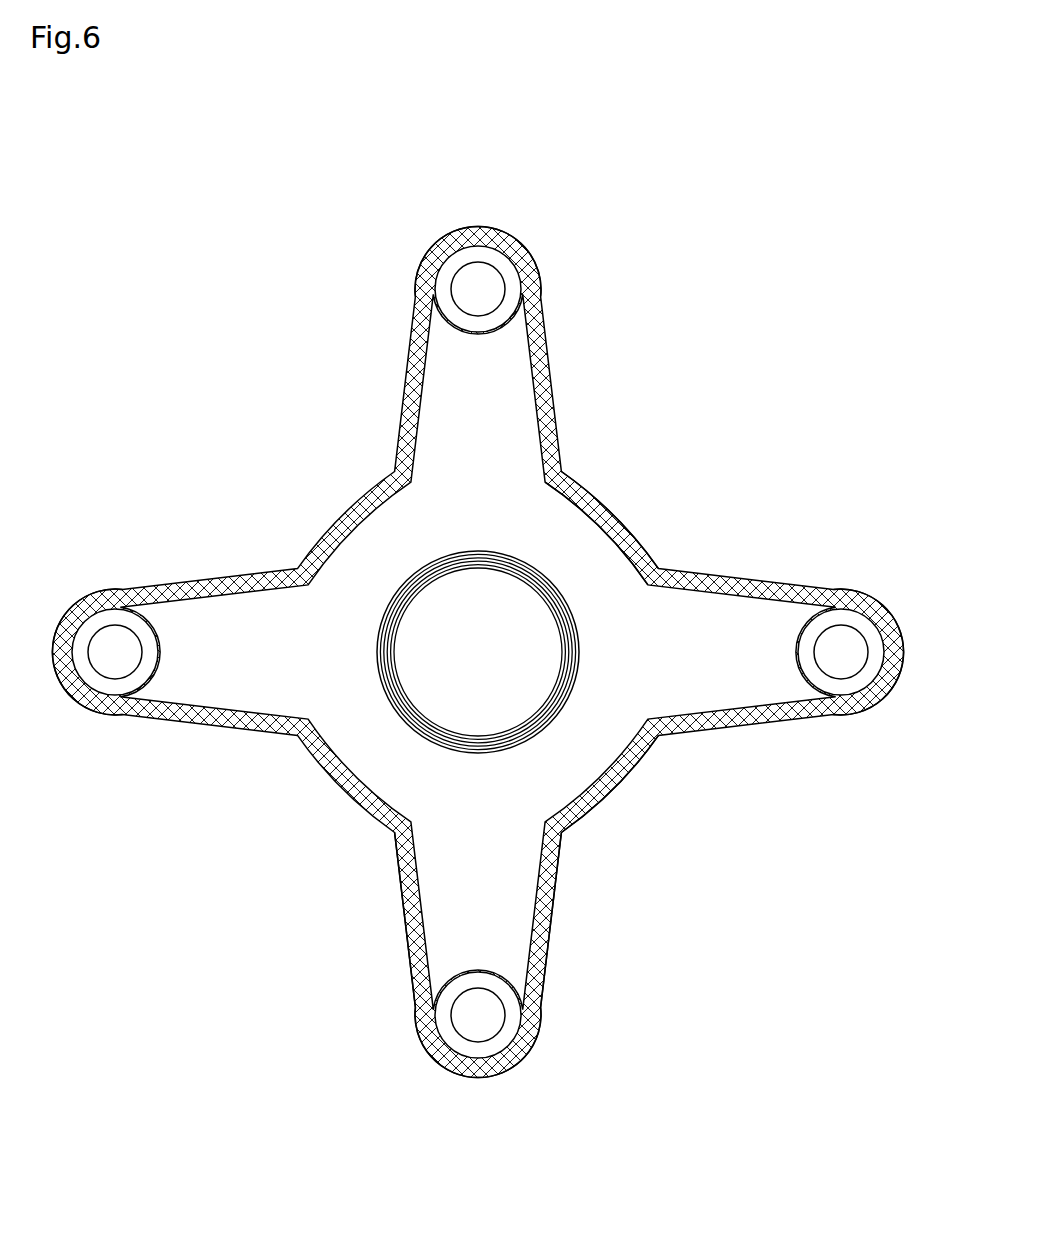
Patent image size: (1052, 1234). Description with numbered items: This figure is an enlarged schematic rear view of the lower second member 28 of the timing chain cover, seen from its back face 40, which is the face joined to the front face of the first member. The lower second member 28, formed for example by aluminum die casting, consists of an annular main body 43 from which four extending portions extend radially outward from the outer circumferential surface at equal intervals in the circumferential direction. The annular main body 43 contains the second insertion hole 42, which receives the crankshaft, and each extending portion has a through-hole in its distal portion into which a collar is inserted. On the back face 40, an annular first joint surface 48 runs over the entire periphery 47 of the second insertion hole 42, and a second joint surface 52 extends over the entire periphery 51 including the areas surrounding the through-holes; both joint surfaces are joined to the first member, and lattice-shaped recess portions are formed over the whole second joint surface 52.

The lower second member 28 is at (559, 412).
The back face 40 is at (586, 772).
The second insertion hole 42 is at (405, 698).
The annular main body 43 is at (622, 511).
The periphery 47 is at (586, 594).
The first joint surface 48 is at (576, 682).
The periphery 51 is at (555, 899).
The second joint surface 52 is at (402, 926).